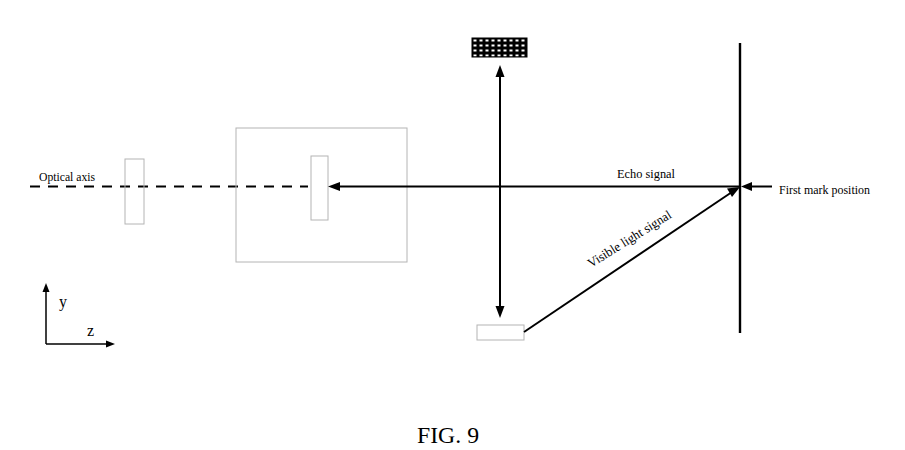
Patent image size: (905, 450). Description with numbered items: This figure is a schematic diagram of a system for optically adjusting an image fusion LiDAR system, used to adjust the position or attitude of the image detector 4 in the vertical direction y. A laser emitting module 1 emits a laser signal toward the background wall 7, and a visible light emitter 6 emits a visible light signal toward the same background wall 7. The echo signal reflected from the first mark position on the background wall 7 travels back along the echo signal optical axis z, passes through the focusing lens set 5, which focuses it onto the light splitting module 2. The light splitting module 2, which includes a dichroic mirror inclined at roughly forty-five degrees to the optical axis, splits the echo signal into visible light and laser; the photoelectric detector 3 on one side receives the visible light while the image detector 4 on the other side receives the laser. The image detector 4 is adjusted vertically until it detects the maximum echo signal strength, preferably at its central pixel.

The laser emitting module 1 is at (521, 38).
The light splitting module 2 is at (322, 262).
The photoelectric detector 3 is at (144, 160).
The image detector 4 is at (329, 171).
The focusing lens set 5 is at (500, 173).
The visible light emitter 6 is at (477, 327).
The background wall 7 is at (740, 87).